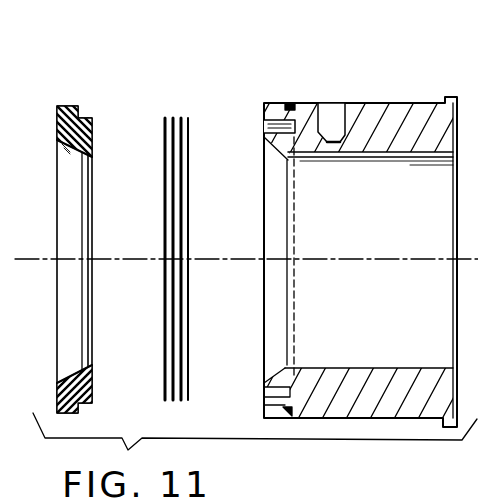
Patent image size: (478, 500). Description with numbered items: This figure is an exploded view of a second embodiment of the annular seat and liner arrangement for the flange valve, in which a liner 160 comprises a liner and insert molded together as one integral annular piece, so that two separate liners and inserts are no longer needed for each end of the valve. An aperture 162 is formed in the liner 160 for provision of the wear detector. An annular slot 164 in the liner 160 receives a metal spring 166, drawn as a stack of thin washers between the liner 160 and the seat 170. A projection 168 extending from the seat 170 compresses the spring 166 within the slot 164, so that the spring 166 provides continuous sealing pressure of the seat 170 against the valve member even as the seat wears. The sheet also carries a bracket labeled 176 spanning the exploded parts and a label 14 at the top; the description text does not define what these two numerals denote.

The optical connector assembly 14 is at (256, 15).
The ferrule retaining assembly 176 is at (399, 499).
The liner 160 is at (388, 98).
The aperture 162 is at (331, 119).
The annular slot 164 is at (268, 127).
The metal spring 166 is at (182, 118).
The projection 168 is at (94, 123).
The seat 170 is at (70, 107).